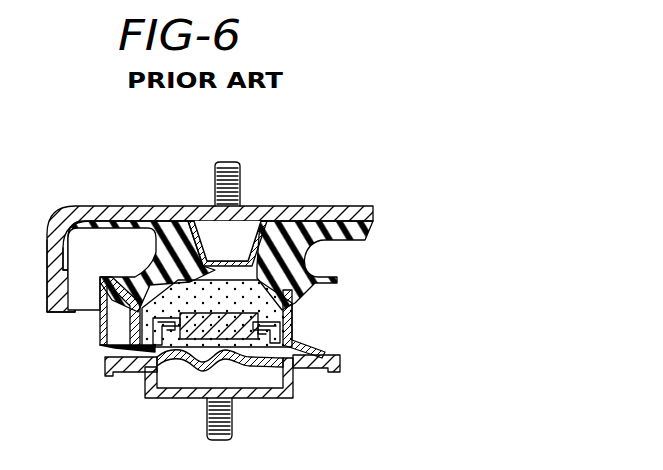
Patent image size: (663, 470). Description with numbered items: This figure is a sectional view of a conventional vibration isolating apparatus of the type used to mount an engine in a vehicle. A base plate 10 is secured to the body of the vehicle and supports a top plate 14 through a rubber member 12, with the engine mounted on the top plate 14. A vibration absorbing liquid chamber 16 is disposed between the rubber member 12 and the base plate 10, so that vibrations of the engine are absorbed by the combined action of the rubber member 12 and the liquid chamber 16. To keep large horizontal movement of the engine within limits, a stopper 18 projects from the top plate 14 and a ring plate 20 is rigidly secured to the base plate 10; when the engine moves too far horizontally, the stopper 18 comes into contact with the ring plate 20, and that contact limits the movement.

The base plate 10 is at (161, 398).
The rubber member 12 is at (128, 278).
The top plate 14 is at (330, 206).
The vibration absorbing liquid chamber 16 is at (233, 304).
The stopper 18 is at (56, 312).
The ring plate 20 is at (97, 318).